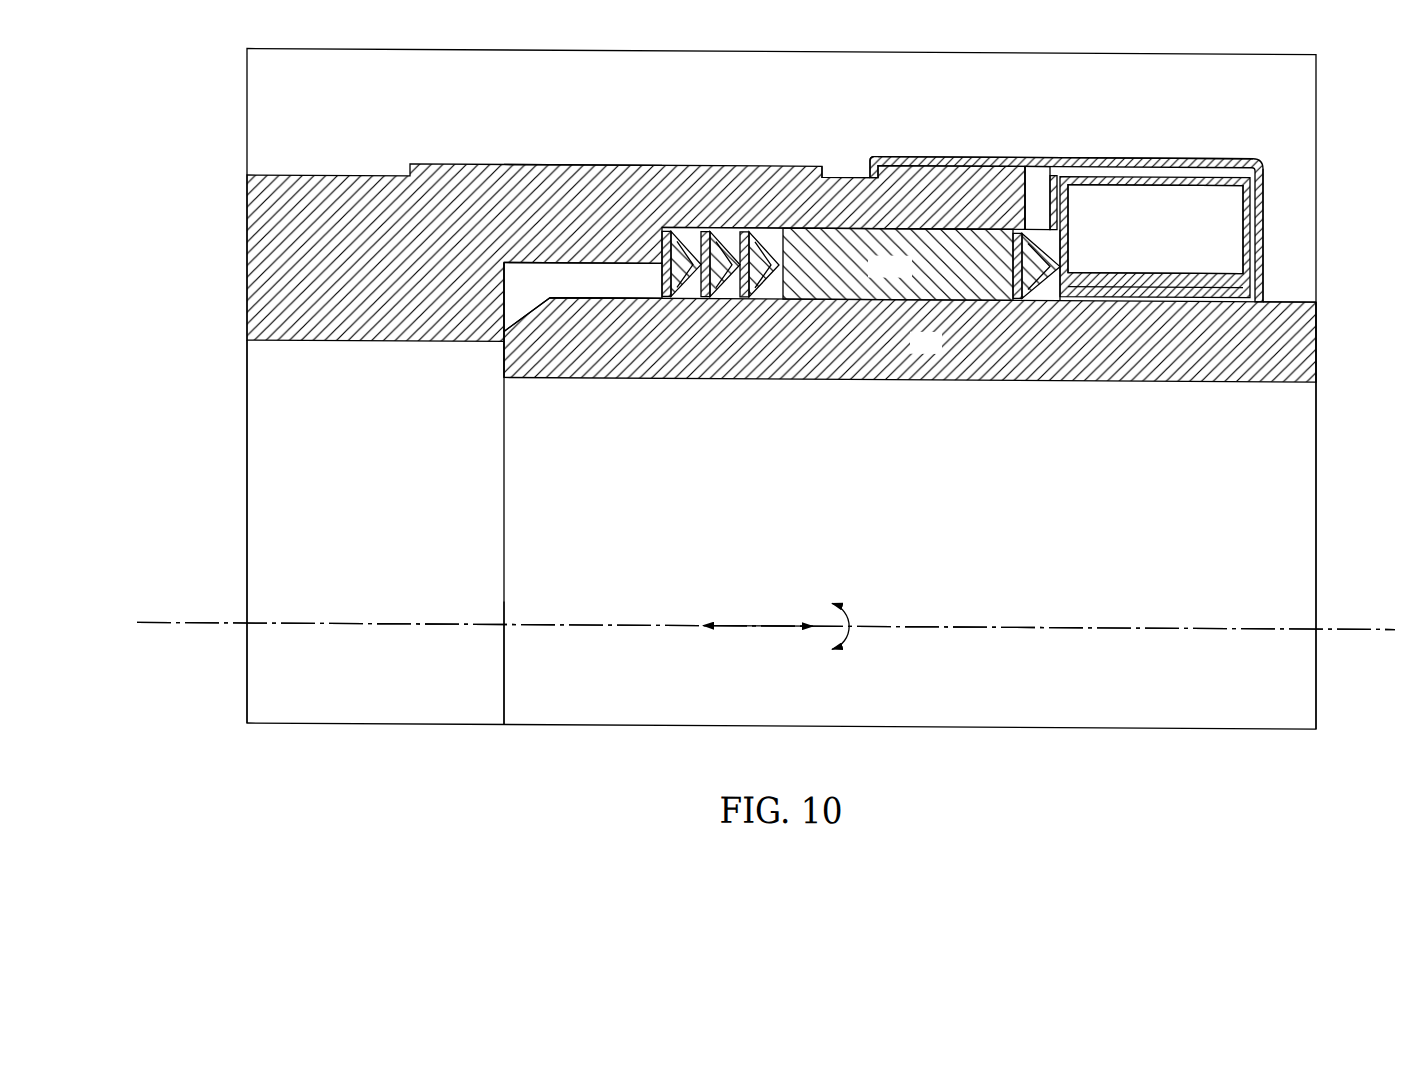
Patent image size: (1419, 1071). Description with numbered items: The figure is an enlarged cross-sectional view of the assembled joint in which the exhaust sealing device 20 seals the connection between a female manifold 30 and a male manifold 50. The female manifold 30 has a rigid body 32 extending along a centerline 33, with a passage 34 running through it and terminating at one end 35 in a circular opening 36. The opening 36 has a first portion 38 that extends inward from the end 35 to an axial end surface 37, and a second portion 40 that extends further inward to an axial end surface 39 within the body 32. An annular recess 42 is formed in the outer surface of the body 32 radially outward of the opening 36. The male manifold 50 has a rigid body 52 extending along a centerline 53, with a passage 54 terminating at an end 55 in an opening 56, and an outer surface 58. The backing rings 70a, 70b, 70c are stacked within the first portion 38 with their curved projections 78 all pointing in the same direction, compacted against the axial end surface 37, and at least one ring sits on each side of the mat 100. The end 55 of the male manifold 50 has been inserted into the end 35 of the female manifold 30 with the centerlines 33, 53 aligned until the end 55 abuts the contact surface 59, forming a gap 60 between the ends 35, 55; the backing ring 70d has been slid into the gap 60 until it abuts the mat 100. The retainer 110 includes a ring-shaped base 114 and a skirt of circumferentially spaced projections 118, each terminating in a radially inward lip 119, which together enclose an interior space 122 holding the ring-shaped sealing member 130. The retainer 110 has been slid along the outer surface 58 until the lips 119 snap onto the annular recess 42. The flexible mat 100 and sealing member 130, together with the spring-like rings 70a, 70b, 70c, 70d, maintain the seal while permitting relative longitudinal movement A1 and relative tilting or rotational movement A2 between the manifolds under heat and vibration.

The exhaust sealing device 20 is at (1013, 148).
The female manifold 30 is at (313, 172).
The body 32 is at (542, 188).
The centerline 33 is at (1365, 626).
The passage 34 is at (285, 512).
The end 35 is at (993, 183).
The opening 36 is at (1070, 262).
The axial end surface 37 is at (670, 214).
The first portion 38 is at (932, 248).
The axial end surface 39 is at (507, 282).
The second portion 40 is at (640, 288).
The annular recess 42 is at (824, 174).
The male manifold 50 is at (1320, 339).
The body 52 is at (913, 351).
The centerline 53 is at (766, 625).
The passage 54 is at (1258, 539).
The end 55 is at (500, 369).
The opening 56 is at (503, 691).
The outer surface 58 is at (1290, 295).
The contact surface 59 is at (527, 316).
The gap 60 is at (600, 278).
The backing ring 70a is at (678, 234).
The backing ring 70b is at (712, 227).
The backing ring 70c is at (753, 245).
The backing ring 70d is at (1036, 296).
The curved projections 78 is at (666, 296).
The mat 100 is at (870, 274).
The retainer 110 is at (1222, 147).
The base 114 is at (1262, 192).
The projections 118 is at (968, 153).
The lip 119 is at (870, 162).
The interior space 122 is at (1148, 220).
The sealing member 130 is at (1177, 223).
The relative longitudinal movement A1 is at (757, 628).
The relative tilting/rotational movement A2 is at (853, 614).